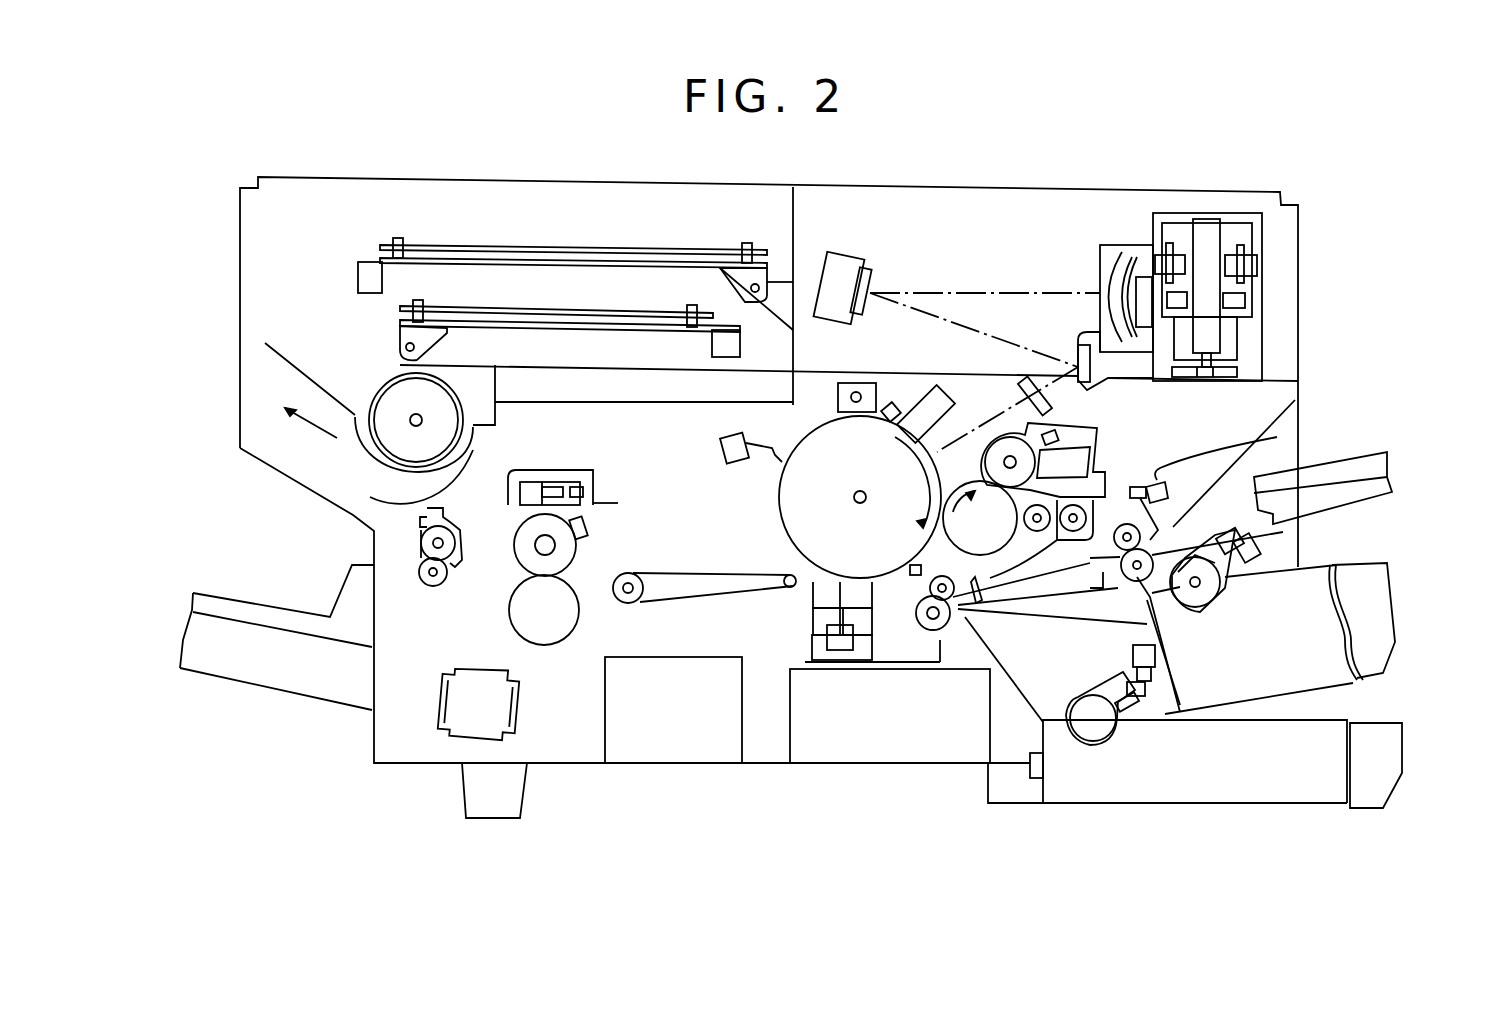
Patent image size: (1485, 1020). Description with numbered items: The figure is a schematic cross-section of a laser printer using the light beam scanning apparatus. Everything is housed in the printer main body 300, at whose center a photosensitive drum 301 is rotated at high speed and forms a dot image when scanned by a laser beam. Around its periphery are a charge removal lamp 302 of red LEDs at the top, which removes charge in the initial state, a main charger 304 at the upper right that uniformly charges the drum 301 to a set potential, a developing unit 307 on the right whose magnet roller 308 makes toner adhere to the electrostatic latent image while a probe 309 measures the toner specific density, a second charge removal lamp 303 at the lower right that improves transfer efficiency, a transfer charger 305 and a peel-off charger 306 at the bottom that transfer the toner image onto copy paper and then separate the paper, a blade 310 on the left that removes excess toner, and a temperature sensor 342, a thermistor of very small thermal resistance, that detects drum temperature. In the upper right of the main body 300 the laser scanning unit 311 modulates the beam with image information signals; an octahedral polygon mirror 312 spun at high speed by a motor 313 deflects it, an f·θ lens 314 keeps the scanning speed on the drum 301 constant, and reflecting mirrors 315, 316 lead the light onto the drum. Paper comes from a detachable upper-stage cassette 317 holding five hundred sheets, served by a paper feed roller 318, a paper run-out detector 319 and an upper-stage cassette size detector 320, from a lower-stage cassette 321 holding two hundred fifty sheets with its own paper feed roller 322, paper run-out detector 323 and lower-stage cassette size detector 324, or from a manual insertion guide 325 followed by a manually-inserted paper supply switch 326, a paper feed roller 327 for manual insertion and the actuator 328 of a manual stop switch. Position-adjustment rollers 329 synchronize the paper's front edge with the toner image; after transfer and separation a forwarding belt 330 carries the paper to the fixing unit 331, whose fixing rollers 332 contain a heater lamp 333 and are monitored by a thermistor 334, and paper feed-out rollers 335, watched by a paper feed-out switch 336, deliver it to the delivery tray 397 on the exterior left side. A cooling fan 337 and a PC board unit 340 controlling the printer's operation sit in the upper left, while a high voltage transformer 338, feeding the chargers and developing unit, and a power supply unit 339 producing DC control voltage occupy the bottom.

The printer main body 300 is at (238, 188).
The photosensitive drum 301 is at (797, 528).
The charge removal lamp 302 is at (867, 383).
The charge removal lamp 303 is at (912, 570).
The main charger 304 is at (945, 393).
The transfer charger 305 is at (855, 622).
The peel-off charger 306 is at (823, 620).
The developing unit 307 is at (1103, 473).
The magnet roller 308 is at (970, 497).
The probe 309 is at (1060, 437).
The blade 310 is at (781, 477).
The laser scanning unit 311 is at (1260, 213).
The octahedral polygon mirror 312 is at (1238, 302).
The motor 313 is at (1232, 265).
The f·θ lens 314 is at (1103, 247).
The reflecting mirror 315 is at (870, 268).
The reflecting mirror 316 is at (1078, 347).
The upper-stage cassette 317 is at (1337, 673).
The paper feed roller 318 is at (1205, 590).
The paper run-out detector 319 is at (1152, 555).
The upper-stage cassette size detector 320 is at (1177, 712).
The lower-stage cassette 321 is at (1325, 793).
The paper feed roller 322 is at (1100, 733).
The paper run-out detector 323 is at (1147, 683).
The lower-stage cassette size detector 324 is at (1037, 778).
The manual insertion guide 325 is at (1373, 462).
The manually-inserted paper supply switch 326 is at (1277, 437).
The paper feed roller 327 is at (1140, 529).
The actuator of manual stop switch 328 is at (986, 590).
The position-adjustment rollers 329 is at (952, 600).
The forwarding belt 330 is at (657, 602).
The fixing unit 331 is at (537, 470).
The fixing rollers 332 is at (520, 552).
The heater lamp 333 is at (547, 555).
The thermistor 334 is at (587, 521).
The paper feed-out rollers 335 is at (428, 567).
The paper feed-out switch 336 is at (427, 518).
The cooling fan 337 is at (377, 397).
The high voltage transformer 338 is at (622, 755).
The power supply unit 339 is at (912, 747).
The PC board unit 340 is at (510, 308).
The temperature sensor 342 is at (895, 400).
The delivery tray 397 is at (202, 657).